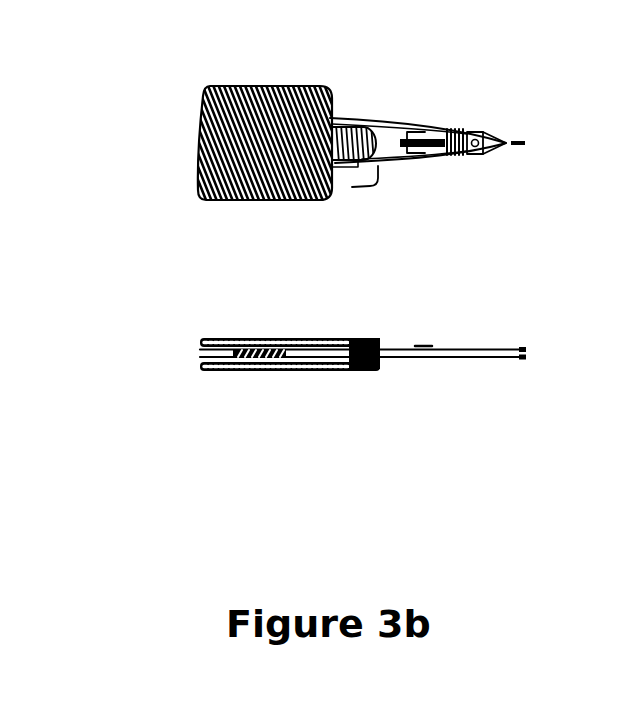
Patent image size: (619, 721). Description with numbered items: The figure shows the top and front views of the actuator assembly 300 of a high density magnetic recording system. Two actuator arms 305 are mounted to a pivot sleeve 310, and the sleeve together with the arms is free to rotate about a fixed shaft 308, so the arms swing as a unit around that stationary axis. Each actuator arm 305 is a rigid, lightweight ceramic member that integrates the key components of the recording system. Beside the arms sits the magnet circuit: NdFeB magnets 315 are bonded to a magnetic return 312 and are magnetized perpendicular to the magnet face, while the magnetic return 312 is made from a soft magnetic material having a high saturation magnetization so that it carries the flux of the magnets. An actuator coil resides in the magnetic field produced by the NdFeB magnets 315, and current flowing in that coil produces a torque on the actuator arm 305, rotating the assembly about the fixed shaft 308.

The actuator assembly 300 is at (172, 146).
The actuator arm 305 is at (437, 160).
The fixed shaft 308 is at (363, 135).
The pivot sleeve 310 is at (363, 370).
The magnetic return 312 is at (295, 172).
The NdFeB magnet 315 is at (257, 343).